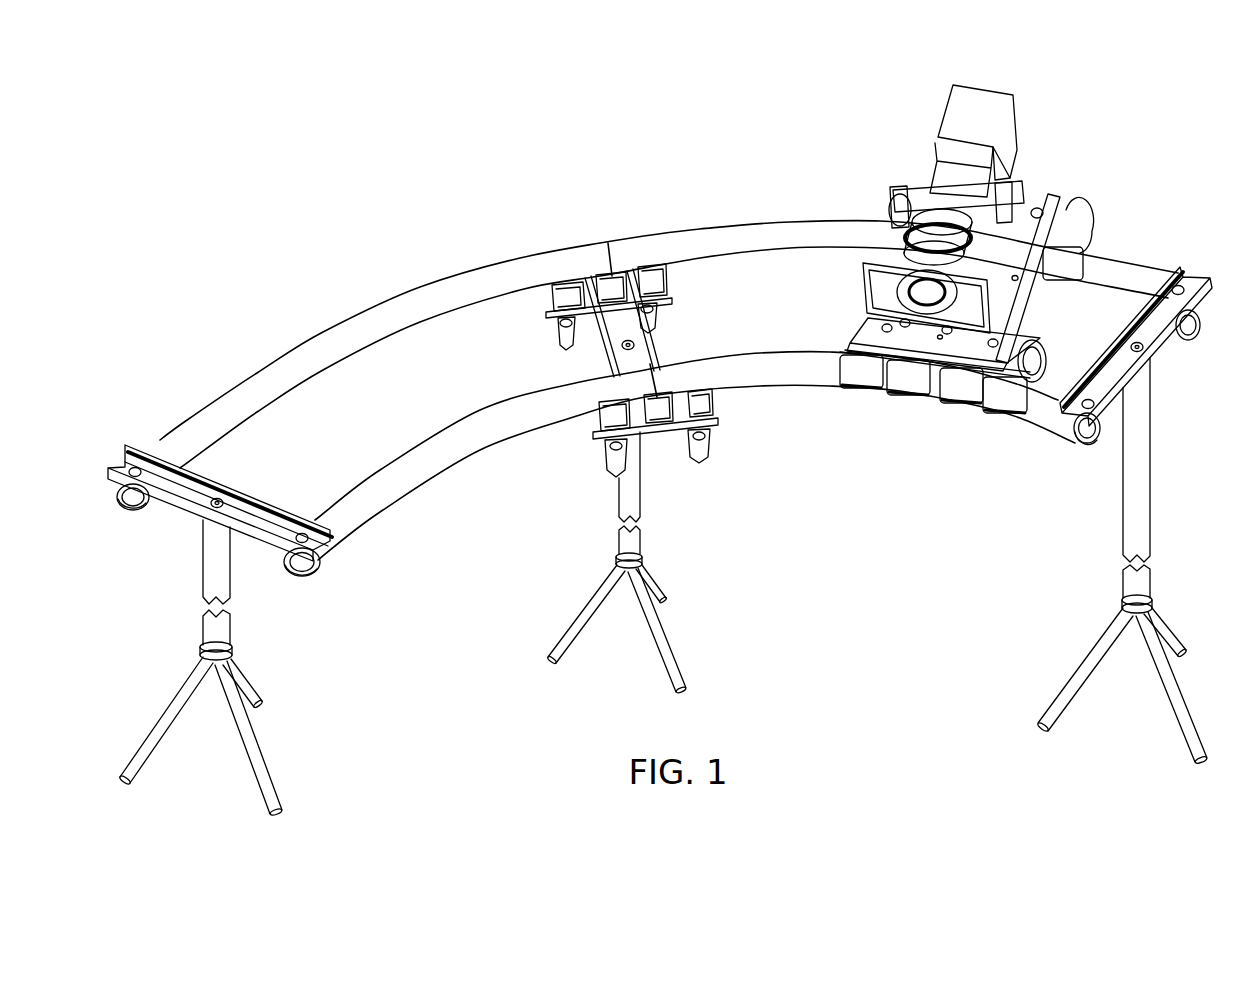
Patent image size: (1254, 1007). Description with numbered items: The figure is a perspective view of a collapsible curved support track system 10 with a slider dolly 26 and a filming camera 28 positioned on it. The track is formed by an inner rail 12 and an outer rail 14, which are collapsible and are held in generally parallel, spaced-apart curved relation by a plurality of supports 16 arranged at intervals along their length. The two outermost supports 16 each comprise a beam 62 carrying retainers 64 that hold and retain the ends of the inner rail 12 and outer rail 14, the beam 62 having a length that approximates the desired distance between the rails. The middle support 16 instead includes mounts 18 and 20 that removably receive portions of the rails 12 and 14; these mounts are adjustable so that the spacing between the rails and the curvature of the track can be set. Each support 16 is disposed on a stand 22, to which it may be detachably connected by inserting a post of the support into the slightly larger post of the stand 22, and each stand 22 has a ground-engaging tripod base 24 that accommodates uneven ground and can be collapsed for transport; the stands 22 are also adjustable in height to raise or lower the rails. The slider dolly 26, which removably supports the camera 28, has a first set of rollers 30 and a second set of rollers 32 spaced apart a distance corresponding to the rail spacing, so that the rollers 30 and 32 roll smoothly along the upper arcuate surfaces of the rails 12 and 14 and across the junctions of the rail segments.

The track system 10 is at (352, 292).
The inner rail 12 is at (477, 449).
The outer rail 14 is at (764, 233).
The support 16 is at (660, 441).
The mount 18 is at (671, 435).
The mount 20 is at (664, 413).
The stand 22 is at (214, 573).
The base 24 is at (254, 746).
The slider dolly 26 is at (1030, 237).
The filming camera 28 is at (981, 97).
The first set of rollers 30 is at (1009, 405).
The second set of rollers 32 is at (1062, 268).
The beam 62 is at (246, 502).
The retainer 64 is at (318, 576).